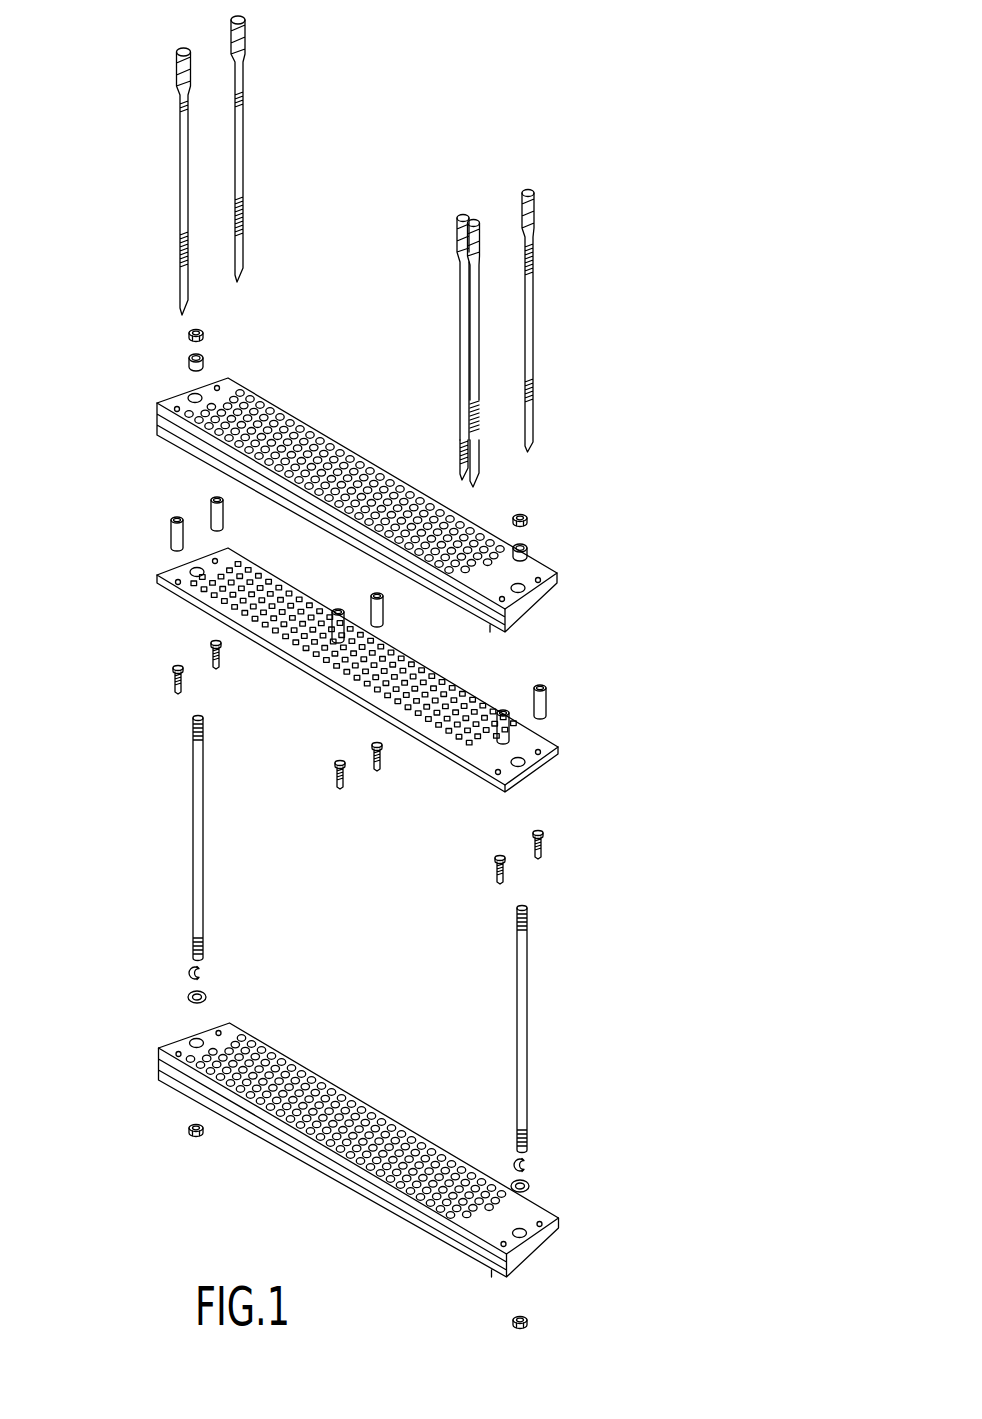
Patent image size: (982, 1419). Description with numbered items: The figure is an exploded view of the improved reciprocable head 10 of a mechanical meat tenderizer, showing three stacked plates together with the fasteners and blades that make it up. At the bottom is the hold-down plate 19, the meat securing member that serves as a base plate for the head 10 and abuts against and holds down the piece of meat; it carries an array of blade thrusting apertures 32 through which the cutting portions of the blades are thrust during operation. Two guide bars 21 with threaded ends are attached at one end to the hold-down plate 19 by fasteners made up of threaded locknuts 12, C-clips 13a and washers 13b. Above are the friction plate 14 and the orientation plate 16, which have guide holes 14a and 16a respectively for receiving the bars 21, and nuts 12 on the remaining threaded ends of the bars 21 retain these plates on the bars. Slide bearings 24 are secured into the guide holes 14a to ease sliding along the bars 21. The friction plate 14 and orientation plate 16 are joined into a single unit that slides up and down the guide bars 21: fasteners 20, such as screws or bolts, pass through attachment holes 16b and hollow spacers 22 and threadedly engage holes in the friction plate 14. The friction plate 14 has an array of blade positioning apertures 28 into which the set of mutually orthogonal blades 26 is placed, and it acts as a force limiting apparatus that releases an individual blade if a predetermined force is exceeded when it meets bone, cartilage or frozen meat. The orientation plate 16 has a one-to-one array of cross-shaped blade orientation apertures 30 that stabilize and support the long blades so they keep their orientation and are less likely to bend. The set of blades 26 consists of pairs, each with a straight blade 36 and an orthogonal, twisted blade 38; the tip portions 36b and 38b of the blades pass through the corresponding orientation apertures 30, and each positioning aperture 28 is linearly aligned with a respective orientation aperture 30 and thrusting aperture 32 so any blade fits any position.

The reciprocable head 10 is at (117, 371).
The threaded locknut 12 is at (206, 333).
The C-clip 13a is at (204, 972).
The washer 13b is at (208, 997).
The friction plate 14 is at (166, 442).
The guide hole 14a is at (526, 590).
The orientation plate 16 is at (162, 598).
The guide hole 16a is at (538, 774).
The attachment hole 16b is at (541, 753).
The hold-down plate 19 is at (158, 1048).
The fastener 20 is at (343, 792).
The guide bar 21 is at (204, 900).
The hollow spacer 22 is at (384, 614).
The slide bearing 24 is at (207, 360).
The set of mutually orthogonal blades 26 is at (548, 284).
The blade positioning aperture 28 is at (356, 458).
The blade orientation aperture 30 is at (297, 671).
The blade thrusting aperture 32 is at (378, 1102).
The straight blade 36 is at (460, 213).
The tip portion 36b is at (463, 413).
The orthogonal blade 38 is at (474, 219).
The tip portion 38b is at (476, 452).